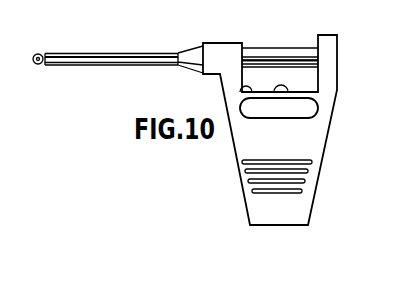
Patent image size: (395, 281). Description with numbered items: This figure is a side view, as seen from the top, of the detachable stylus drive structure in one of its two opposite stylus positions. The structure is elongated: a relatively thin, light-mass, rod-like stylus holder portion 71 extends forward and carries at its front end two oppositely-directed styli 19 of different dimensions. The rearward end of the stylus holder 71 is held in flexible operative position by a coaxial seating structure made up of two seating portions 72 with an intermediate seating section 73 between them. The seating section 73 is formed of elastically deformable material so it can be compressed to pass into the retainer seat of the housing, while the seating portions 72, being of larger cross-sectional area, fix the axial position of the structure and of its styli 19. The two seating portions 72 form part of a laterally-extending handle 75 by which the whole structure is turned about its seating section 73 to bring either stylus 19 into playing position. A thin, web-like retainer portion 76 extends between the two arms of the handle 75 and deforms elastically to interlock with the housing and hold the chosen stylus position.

The stylus 19 is at (41, 53).
The stylus holder portion 71 is at (117, 53).
The seating portion 72 is at (225, 50).
The seating section 73 is at (270, 55).
The handle 75 is at (247, 135).
The retainer portion 76 is at (239, 83).